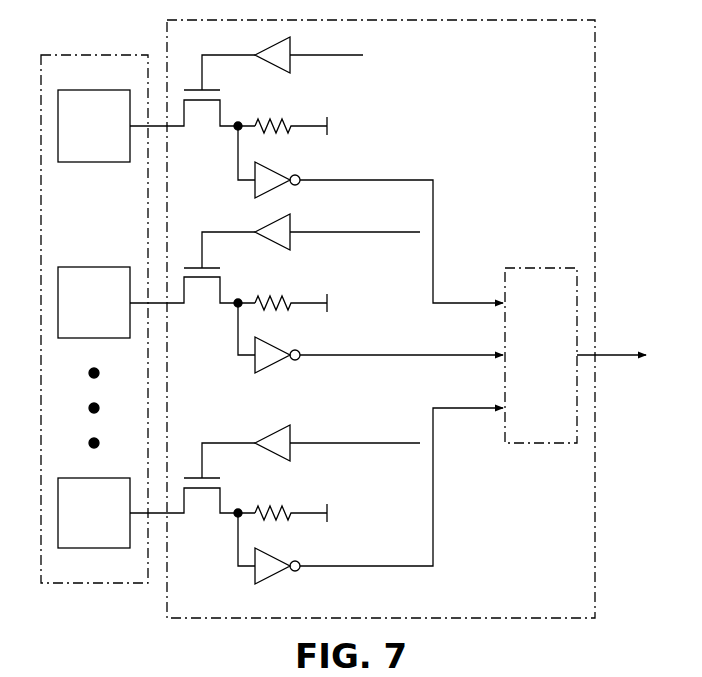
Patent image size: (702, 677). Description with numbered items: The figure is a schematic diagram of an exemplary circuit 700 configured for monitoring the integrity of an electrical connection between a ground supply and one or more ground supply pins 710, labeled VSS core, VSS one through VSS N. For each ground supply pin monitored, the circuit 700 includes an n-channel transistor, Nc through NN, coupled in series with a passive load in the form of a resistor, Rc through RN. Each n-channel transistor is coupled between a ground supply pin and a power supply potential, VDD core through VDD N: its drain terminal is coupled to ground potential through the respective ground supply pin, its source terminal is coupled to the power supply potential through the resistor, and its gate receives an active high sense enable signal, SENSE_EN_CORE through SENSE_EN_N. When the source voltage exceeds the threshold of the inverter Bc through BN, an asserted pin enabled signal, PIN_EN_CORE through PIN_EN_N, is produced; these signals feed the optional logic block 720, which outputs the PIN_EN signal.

The circuit 700 is at (577, 610).
The ground supply pins 710 is at (92, 50).
The optional logic 720 is at (540, 264).